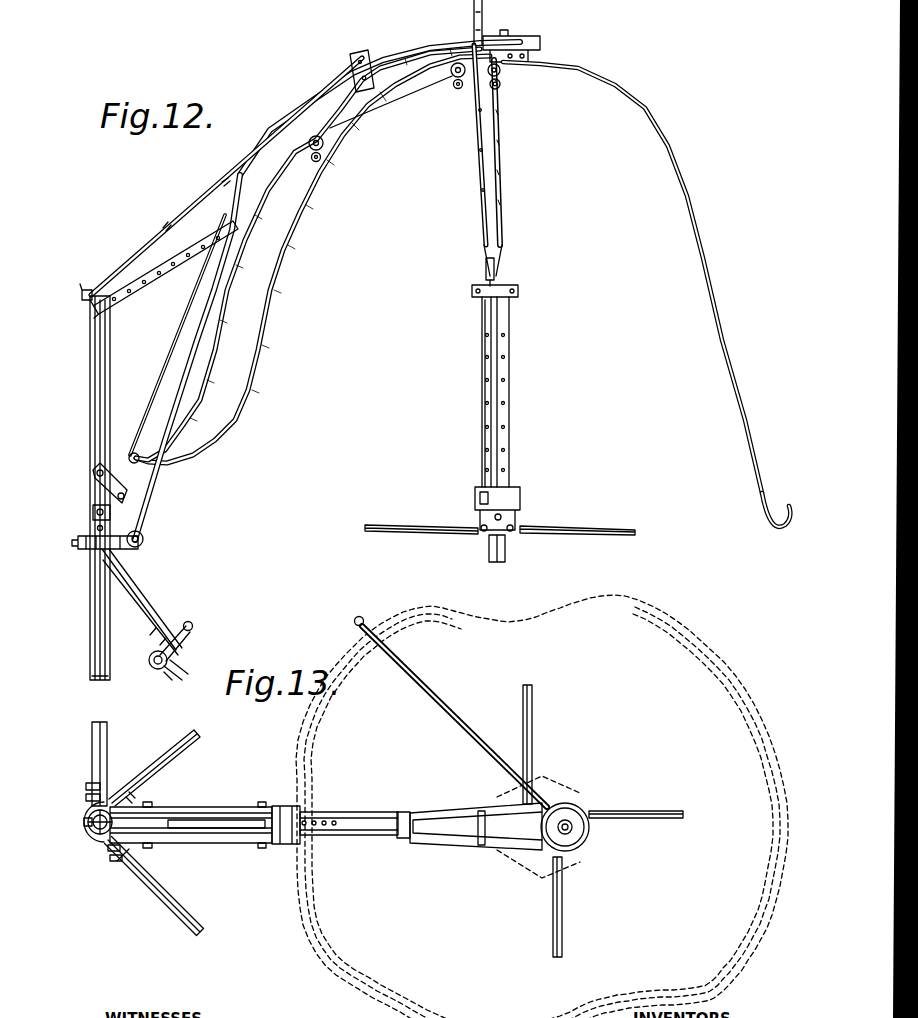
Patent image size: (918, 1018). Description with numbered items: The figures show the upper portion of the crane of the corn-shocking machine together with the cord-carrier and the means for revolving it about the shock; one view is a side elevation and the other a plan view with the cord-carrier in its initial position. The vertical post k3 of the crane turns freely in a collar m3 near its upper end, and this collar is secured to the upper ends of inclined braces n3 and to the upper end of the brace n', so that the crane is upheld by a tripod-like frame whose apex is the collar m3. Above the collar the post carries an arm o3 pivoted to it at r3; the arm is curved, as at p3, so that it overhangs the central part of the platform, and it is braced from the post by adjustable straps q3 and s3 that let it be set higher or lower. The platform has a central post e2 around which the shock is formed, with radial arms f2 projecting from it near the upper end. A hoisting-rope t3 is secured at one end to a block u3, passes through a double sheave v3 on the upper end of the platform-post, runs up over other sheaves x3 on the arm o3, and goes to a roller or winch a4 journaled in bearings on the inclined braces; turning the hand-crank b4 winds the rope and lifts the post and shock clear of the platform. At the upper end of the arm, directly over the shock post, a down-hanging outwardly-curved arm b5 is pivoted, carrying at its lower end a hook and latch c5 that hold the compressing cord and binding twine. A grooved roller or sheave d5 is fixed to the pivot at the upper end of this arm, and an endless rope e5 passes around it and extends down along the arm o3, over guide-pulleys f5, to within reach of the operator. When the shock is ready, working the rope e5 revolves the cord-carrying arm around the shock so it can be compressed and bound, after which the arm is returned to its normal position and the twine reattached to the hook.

In FIG. 12, the vertical post of the crane k3 is at (75, 488).
In FIG. 13, the vertical post of the crane k3 is at (88, 830).
In FIG. 12, the adjustable strap q3 is at (148, 248).
In FIG. 13, the adjustable strap q3 is at (343, 830).
In FIG. 12, the adjustable strap s3 is at (172, 275).
In FIG. 12, the arm o3 is at (397, 86).
In FIG. 13, the arm o3 is at (461, 824).
In FIG. 12, the curved portion of the arm p3 is at (318, 107).
In FIG. 12, the hoisting-rope t3 is at (500, 150).
In FIG. 12, the endless rope e5 is at (412, 44).
In FIG. 13, the endless rope e5 is at (494, 810).
In FIG. 12, the guide-pulley f5 is at (358, 56).
In FIG. 12, the grooved roller or sheave d5 is at (503, 35).
In FIG. 13, the grooved roller or sheave d5 is at (572, 822).
In FIG. 12, the sheave x3 is at (455, 90).
In FIG. 12, the block u3 is at (502, 74).
In FIG. 12, the double sheave v3 is at (503, 263).
In FIG. 12, the down-hanging outwardly-curved arm b5 is at (697, 248).
In FIG. 13, the down-hanging outwardly-curved arm b5 is at (427, 678).
In FIG. 12, the hook and latch c5 is at (777, 499).
In FIG. 12, the radial arm f2 is at (377, 529).
In FIG. 13, the radial arm f2 is at (533, 742).
In FIG. 12, the central post e2 is at (505, 550).
In FIG. 12, the pivot r3 is at (108, 492).
In FIG. 12, the collar m3 is at (84, 532).
In FIG. 13, the collar m3 is at (83, 810).
In FIG. 12, the inclined brace n3 is at (150, 608).
In FIG. 13, the inclined brace n3 is at (95, 752).
In FIG. 13, the brace n' is at (154, 765).
In FIG. 12, the hand-crank b4 is at (200, 620).
In FIG. 12, the roller or winch a4 is at (150, 667).